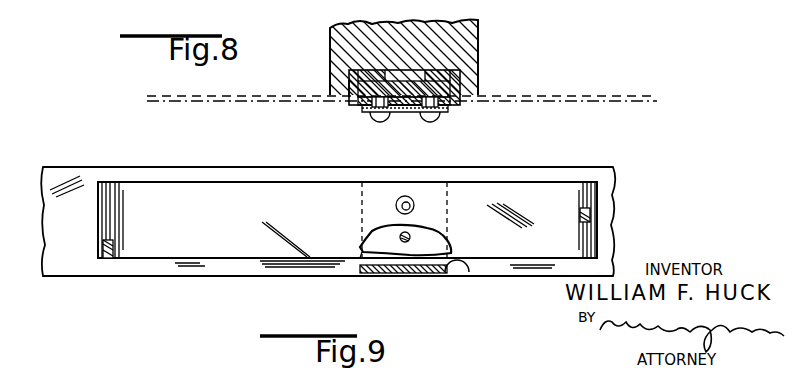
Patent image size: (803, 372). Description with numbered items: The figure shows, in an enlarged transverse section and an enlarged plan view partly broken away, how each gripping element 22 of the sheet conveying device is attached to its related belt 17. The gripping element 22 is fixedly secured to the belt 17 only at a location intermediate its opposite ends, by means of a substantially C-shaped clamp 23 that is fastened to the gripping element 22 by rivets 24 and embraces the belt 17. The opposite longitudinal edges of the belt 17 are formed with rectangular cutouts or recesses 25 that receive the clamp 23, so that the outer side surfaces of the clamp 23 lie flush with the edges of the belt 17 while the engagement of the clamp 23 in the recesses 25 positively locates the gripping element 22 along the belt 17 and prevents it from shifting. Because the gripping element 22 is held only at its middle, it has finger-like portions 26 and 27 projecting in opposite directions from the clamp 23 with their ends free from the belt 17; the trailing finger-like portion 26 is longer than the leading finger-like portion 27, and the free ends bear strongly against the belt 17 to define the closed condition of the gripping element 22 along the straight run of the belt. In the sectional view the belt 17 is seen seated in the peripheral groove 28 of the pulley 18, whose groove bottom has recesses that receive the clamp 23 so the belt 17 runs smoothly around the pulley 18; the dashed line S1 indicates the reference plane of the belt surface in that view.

In FIG. 8, the belt 17 is at (455, 80).
In FIG. 9, the belt 17 is at (146, 177).
In FIG. 8, the pulley 18 is at (462, 46).
In FIG. 8, the gripping element 22 is at (404, 114).
In FIG. 9, the gripping element 22 is at (295, 265).
In FIG. 8, the C-shaped clamp 23 is at (357, 104).
In FIG. 9, the C-shaped clamp 23 is at (383, 240).
In FIG. 8, the rivets 24 is at (434, 114).
In FIG. 9, the rivets 24 is at (405, 205).
In FIG. 9, the recesses 25 is at (455, 266).
In FIG. 9, the finger-like portion 26 is at (108, 258).
In FIG. 9, the finger-like portion 27 is at (586, 190).
In FIG. 8, the peripheral groove 28 is at (350, 88).
In FIG. 8, the surface plane S1 is at (580, 97).